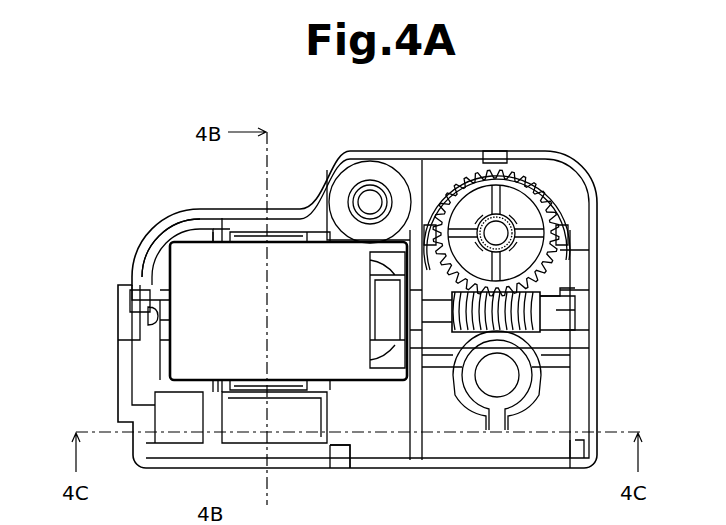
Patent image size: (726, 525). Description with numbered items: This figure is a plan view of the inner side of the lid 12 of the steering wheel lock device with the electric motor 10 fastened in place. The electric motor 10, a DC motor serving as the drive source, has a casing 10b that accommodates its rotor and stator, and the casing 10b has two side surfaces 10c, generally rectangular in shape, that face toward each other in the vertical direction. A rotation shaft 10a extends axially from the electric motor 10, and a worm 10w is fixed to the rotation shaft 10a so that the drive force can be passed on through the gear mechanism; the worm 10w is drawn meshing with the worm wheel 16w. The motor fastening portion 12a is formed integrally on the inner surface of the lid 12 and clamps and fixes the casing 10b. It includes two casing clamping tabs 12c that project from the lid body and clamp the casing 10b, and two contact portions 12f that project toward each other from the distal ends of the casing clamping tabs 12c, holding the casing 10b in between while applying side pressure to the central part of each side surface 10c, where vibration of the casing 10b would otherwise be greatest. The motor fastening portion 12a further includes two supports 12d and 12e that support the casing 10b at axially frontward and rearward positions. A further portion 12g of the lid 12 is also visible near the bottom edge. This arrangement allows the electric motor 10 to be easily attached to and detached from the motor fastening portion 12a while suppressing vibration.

The electric motor 10 is at (342, 277).
The rotation shaft 10a is at (145, 312).
The casing 10b is at (190, 252).
The side surfaces 10c is at (228, 238).
The worm 10w is at (530, 325).
The lid 12 is at (459, 142).
The motor fastening portion 12a is at (354, 138).
The casing clamping tabs 12c is at (288, 232).
The support 12d is at (157, 270).
The support 12e is at (427, 206).
The contact portions 12f is at (262, 243).
The housing portion 12g is at (420, 470).
The worm wheel 16w is at (540, 188).